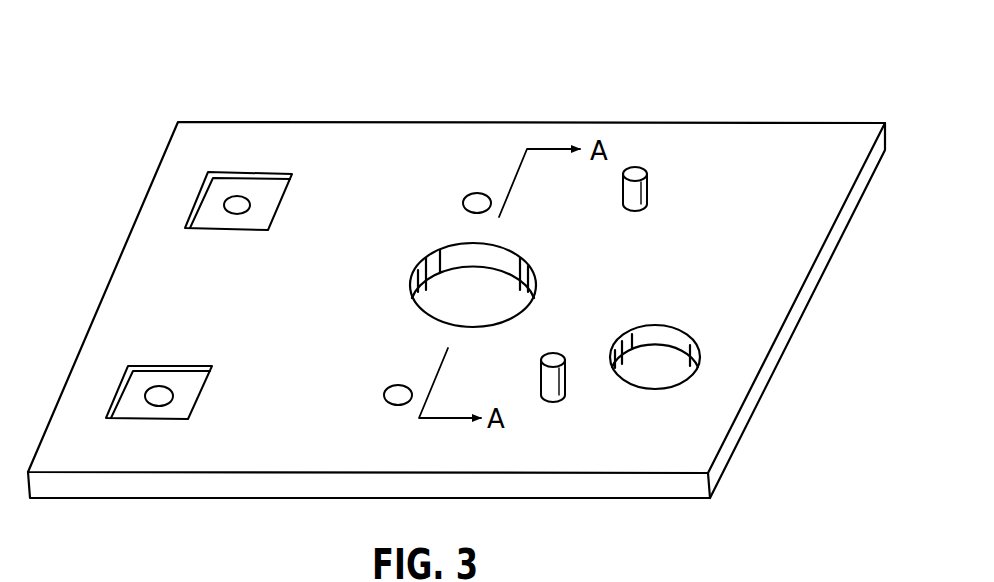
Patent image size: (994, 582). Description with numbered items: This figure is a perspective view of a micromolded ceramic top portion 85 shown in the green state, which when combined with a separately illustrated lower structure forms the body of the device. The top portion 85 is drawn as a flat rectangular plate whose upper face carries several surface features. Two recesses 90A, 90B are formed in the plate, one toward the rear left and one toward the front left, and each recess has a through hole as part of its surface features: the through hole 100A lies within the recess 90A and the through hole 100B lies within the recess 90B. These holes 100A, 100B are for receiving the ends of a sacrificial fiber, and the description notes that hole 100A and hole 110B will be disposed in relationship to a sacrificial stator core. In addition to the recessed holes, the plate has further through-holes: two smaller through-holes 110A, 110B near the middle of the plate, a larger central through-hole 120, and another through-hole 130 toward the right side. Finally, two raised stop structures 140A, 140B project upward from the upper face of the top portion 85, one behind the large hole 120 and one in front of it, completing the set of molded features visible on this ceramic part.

The micromolded ceramic top portion 85 is at (670, 98).
The recess 90A is at (260, 190).
The recess 90B is at (182, 407).
The through hole 100A is at (226, 207).
The through hole 100B is at (176, 378).
The through-hole 110A is at (477, 193).
The through-hole 110B is at (386, 390).
The through-hole 120 is at (513, 296).
The through-hole 130 is at (667, 362).
The raised stop structure 140A is at (647, 190).
The raised stop structure 140B is at (565, 378).